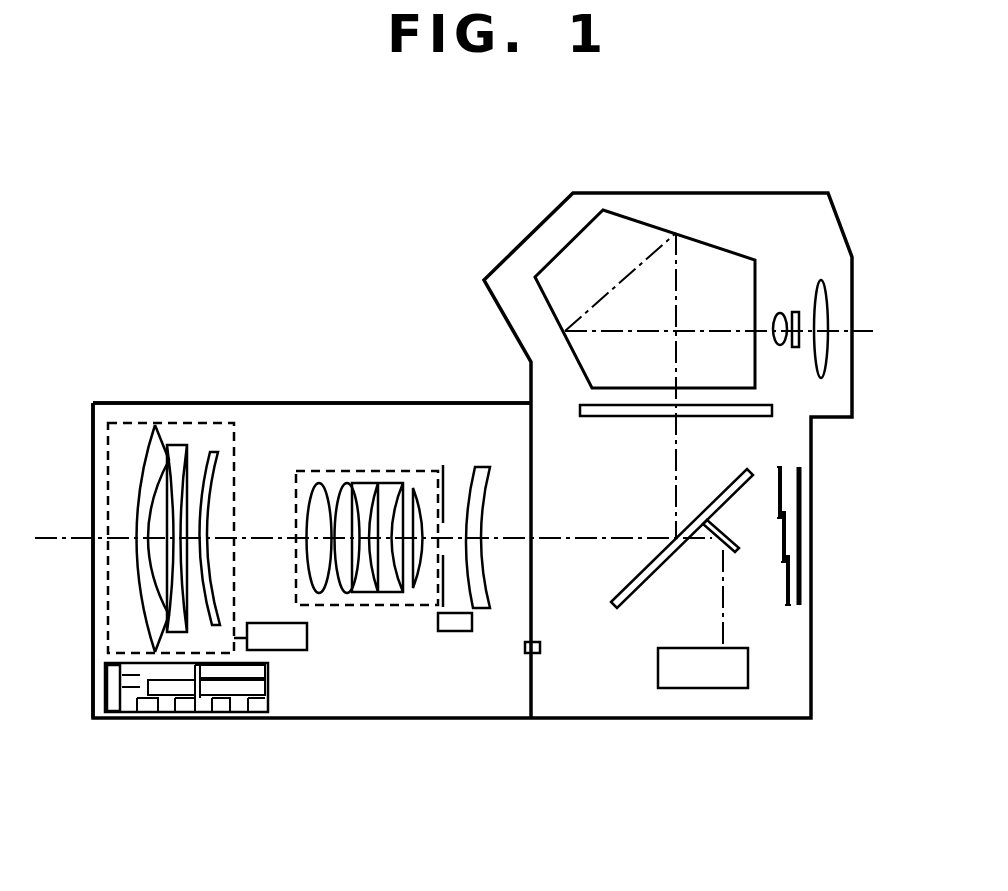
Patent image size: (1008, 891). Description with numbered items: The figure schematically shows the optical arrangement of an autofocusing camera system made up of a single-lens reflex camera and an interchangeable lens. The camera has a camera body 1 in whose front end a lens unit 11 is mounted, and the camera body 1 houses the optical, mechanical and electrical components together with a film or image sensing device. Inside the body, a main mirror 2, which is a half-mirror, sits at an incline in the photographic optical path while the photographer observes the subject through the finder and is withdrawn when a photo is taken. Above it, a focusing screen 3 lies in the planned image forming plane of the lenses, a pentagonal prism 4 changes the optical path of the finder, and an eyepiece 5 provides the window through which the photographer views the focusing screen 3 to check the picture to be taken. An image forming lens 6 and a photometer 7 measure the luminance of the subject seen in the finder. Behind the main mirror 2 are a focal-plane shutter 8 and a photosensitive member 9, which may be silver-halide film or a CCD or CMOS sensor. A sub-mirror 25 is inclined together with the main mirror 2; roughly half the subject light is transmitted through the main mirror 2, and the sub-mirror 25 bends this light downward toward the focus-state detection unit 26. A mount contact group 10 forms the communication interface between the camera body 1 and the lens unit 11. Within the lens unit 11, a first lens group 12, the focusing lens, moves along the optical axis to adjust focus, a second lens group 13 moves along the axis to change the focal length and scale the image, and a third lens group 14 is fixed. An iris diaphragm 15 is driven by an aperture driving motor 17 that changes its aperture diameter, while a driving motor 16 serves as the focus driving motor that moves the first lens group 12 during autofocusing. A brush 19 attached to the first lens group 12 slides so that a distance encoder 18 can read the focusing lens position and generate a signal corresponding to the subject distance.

The camera body 1 is at (560, 200).
The main mirror 2 is at (752, 470).
The focusing screen 3 is at (606, 417).
The pentagonal prism 4 is at (540, 270).
The eyepiece 5 is at (828, 307).
The image forming lens 6 is at (780, 313).
The photometer 7 is at (797, 312).
The focal-plane shutter 8 is at (788, 604).
The photosensitive member 9 is at (804, 485).
The mount contact group 10 is at (540, 648).
The lens unit 11 is at (104, 403).
The first lens group 12 is at (218, 423).
The second lens group 13 is at (310, 471).
The third lens group 14 is at (478, 467).
The iris diaphragm 15 is at (444, 468).
The driving motor 16 is at (300, 651).
The aperture driving motor 17 is at (455, 632).
The distance encoder 18 is at (130, 713).
The brush 19 is at (106, 665).
The sub-mirror 25 is at (736, 552).
The focus-state detection unit 26 is at (735, 690).